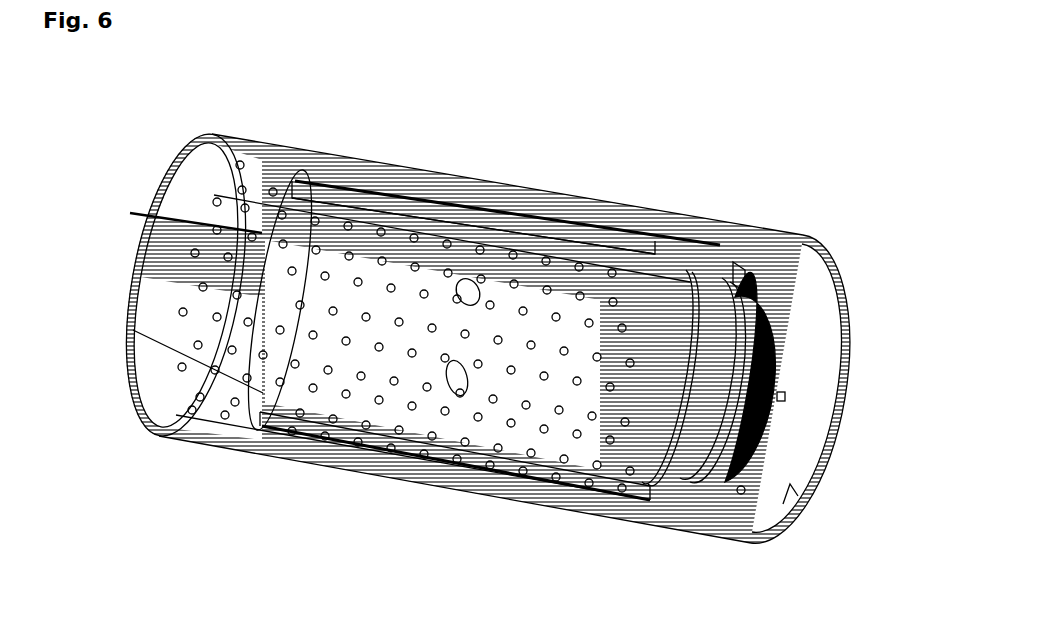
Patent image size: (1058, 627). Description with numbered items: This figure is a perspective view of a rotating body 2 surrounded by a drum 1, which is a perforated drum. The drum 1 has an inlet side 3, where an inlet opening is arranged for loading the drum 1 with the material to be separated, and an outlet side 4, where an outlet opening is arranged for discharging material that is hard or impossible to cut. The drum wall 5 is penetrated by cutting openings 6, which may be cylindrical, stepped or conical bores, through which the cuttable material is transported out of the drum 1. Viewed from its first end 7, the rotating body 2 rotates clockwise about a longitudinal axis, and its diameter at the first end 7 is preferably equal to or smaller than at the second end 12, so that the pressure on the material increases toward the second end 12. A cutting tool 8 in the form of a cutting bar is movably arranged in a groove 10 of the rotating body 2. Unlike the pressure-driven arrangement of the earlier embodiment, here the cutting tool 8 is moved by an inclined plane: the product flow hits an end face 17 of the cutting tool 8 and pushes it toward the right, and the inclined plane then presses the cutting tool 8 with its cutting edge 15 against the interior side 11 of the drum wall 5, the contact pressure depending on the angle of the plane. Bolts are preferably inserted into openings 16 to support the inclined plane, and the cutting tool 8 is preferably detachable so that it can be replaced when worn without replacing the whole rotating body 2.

The drum 1 is at (783, 240).
The rotating body 2 is at (765, 338).
The inlet side 3 is at (172, 176).
The outlet side 4 is at (838, 420).
The drum wall 5 is at (165, 400).
The cutting openings 6 is at (215, 203).
The first end 7 is at (290, 218).
The cutting tool 8 is at (328, 205).
The groove 10 is at (740, 262).
The interior side 11 is at (786, 490).
The second end 12 is at (745, 432).
The cutting edge 15 is at (582, 223).
The openings 16 is at (467, 290).
The end face 17 is at (297, 207).